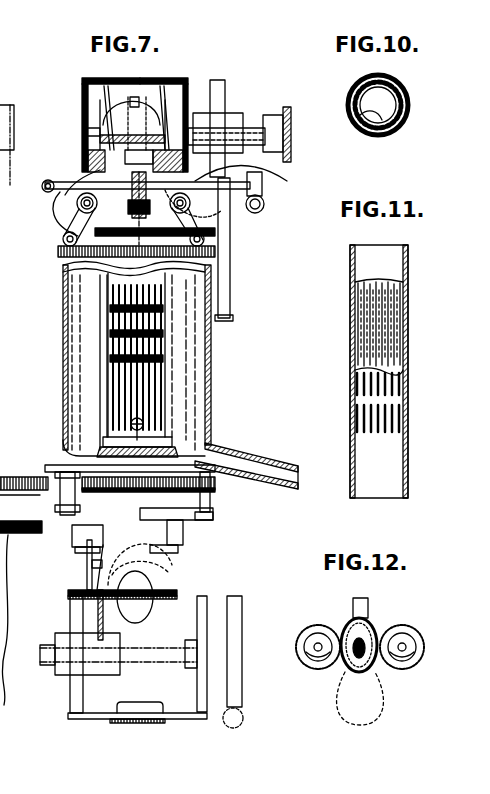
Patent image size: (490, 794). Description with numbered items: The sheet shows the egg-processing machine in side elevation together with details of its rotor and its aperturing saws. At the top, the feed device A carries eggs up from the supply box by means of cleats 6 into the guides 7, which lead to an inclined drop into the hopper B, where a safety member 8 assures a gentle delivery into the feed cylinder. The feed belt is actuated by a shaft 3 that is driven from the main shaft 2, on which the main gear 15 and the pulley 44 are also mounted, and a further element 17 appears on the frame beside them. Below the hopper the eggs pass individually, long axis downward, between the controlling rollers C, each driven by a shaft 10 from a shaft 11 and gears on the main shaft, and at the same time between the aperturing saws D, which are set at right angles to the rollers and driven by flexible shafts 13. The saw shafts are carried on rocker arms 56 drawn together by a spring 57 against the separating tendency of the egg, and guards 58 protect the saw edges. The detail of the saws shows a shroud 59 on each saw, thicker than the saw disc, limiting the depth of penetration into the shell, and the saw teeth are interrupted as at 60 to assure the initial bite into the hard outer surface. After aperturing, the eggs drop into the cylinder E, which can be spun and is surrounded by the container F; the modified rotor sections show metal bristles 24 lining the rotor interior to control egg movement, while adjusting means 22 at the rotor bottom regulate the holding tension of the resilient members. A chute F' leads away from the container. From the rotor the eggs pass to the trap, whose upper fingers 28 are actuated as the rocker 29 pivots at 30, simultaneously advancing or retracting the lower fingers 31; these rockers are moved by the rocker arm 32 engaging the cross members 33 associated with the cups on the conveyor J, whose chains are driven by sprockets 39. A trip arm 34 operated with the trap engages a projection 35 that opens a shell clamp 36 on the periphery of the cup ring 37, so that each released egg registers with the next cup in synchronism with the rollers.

In FIG. 7, the feed device A is at (90, 78).
In FIG. 7, the hopper B is at (125, 125).
In FIG. 7, the aperturing saws D is at (247, 181).
In FIG. 12, the aperturing saws D is at (365, 610).
In FIG. 7, the cylinder E is at (166, 343).
In FIG. 10, the cylinder E is at (404, 118).
In FIG. 11, the cylinder E is at (399, 371).
In FIG. 7, the container F is at (163, 359).
In FIG. 7, the discharge chute F' is at (246, 454).
In FIG. 7, the conveyor J is at (200, 598).
In FIG. 12, the controlling rollers C is at (300, 645).
In FIG. 7, the shaft 2 is at (0, 345).
In FIG. 7, the shaft 3 is at (0, 122).
In FIG. 7, the cleats 6 is at (0, 85).
In FIG. 7, the guides 7 is at (116, 88).
In FIG. 7, the safety member 8 is at (150, 78).
In FIG. 7, the shaft 10 is at (205, 225).
In FIG. 7, the shaft 11 is at (258, 212).
In FIG. 7, the flexible shafts 13 is at (0, 297).
In FIG. 7, the main gear 15 is at (12, 478).
In FIG. 7, the partition 17 is at (6, 48).
In FIG. 7, the adjusting means 22 is at (143, 423).
In FIG. 10, the metal bristles 24 is at (372, 134).
In FIG. 11, the metal bristles 24 is at (385, 305).
In FIG. 7, the upper fingers 28 is at (63, 495).
In FIG. 7, the rocker 29 is at (75, 548).
In FIG. 7, the pivot 30 is at (185, 548).
In FIG. 7, the lower fingers 31 is at (88, 566).
In FIG. 7, the rocker arm 32 is at (92, 578).
In FIG. 7, the cross members 33 is at (85, 585).
In FIG. 7, the trip arm 34 is at (98, 619).
In FIG. 7, the projection 35 is at (97, 672).
In FIG. 7, the shell clamp 36 is at (180, 592).
In FIG. 7, the cup ring 37 is at (150, 598).
In FIG. 7, the sprockets 39 is at (195, 693).
In FIG. 7, the pulley 44 is at (55, 540).
In FIG. 7, the rocker arms 56 is at (64, 241).
In FIG. 7, the spring 57 is at (75, 265).
In FIG. 7, the guards 58 is at (60, 200).
In FIG. 12, the shroud 59 is at (312, 668).
In FIG. 12, the interrupted saw teeth 60 is at (338, 625).